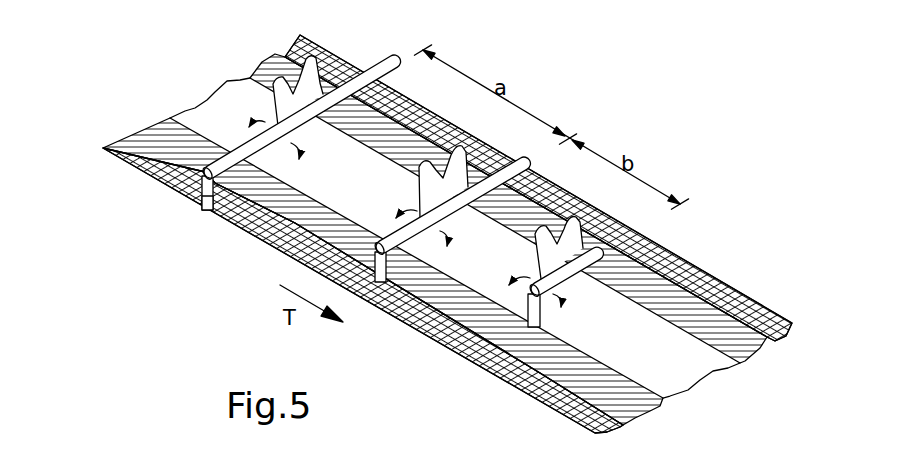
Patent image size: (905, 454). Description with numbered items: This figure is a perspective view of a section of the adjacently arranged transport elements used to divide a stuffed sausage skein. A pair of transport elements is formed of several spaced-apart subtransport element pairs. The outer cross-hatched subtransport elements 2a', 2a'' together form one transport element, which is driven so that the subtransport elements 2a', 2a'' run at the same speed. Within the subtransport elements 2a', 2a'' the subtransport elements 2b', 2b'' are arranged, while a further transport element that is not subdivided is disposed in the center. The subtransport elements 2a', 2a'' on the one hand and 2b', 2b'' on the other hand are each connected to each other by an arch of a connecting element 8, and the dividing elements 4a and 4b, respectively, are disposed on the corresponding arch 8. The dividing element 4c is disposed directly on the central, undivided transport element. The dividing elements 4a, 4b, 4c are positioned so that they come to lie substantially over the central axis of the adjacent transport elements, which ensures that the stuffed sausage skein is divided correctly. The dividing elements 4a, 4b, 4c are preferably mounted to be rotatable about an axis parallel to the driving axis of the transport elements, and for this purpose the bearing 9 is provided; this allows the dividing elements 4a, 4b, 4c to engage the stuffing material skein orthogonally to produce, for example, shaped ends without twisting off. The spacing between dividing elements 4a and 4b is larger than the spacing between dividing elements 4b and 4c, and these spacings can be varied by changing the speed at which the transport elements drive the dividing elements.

The subtransport element 2a' is at (374, 266).
The subtransport element 2a'' is at (515, 173).
The subtransport element 2b' is at (508, 213).
The subtransport element 2b'' is at (363, 290).
The dividing element 4a is at (341, 86).
The dividing element 4b is at (496, 162).
The dividing element 4c is at (597, 217).
The connecting element 8 is at (210, 212).
The bearing 9 is at (197, 182).